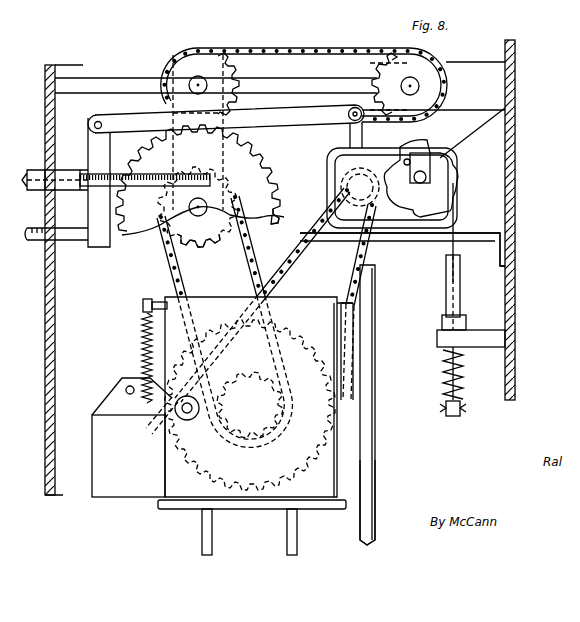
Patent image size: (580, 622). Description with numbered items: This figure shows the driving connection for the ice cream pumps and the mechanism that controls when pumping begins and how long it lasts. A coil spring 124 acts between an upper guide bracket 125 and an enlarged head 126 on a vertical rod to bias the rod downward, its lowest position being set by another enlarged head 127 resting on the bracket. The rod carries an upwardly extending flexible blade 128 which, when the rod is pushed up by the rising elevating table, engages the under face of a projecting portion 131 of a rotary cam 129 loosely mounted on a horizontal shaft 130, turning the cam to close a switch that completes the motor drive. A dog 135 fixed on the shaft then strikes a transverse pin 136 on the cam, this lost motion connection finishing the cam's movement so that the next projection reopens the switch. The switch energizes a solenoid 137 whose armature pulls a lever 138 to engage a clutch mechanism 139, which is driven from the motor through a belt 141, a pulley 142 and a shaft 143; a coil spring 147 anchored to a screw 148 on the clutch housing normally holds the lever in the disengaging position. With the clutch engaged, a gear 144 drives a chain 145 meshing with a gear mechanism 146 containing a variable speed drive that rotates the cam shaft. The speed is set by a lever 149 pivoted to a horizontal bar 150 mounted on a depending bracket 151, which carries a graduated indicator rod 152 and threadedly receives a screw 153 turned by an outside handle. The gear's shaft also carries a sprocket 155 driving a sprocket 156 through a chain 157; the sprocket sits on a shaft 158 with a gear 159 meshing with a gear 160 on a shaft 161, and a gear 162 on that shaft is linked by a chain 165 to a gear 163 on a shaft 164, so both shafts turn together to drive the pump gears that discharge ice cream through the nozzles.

The coil spring 124 is at (447, 372).
The upper guide bracket 125 is at (483, 335).
The enlarged head 126 is at (440, 410).
The enlarged head 127 is at (463, 318).
The flexible blade 128 is at (462, 214).
The rotary cam 129 is at (432, 163).
The horizontal shaft 130 is at (426, 177).
The projecting portion 131 is at (458, 184).
The dog 135 is at (505, 108).
The transverse pin 136 is at (415, 147).
The solenoid 137 is at (126, 488).
The lever 138 is at (143, 383).
The clutch mechanism 139 is at (179, 490).
The belt 141 is at (366, 469).
The pulley 142 is at (378, 353).
The shaft 143 is at (348, 303).
The gear 144 is at (307, 342).
The chain 145 is at (283, 262).
The gear mechanism 146 is at (329, 187).
The coil spring 147 is at (143, 333).
The screw 148 is at (150, 302).
The lever 149 is at (348, 133).
The horizontal bar 150 is at (275, 117).
The depending bracket 151 is at (93, 152).
The indicator rod 152 is at (71, 236).
The screw 153 is at (117, 172).
The sprocket 155 is at (233, 368).
The sprocket 156 is at (213, 243).
The chain 157 is at (170, 258).
The shaft 158 is at (200, 206).
The gear 159 is at (273, 173).
The gear 160 is at (164, 112).
The shaft 161 is at (193, 80).
The gear 162 is at (243, 66).
The gear 163 is at (377, 77).
The shaft 164 is at (412, 85).
The chain 165 is at (313, 49).